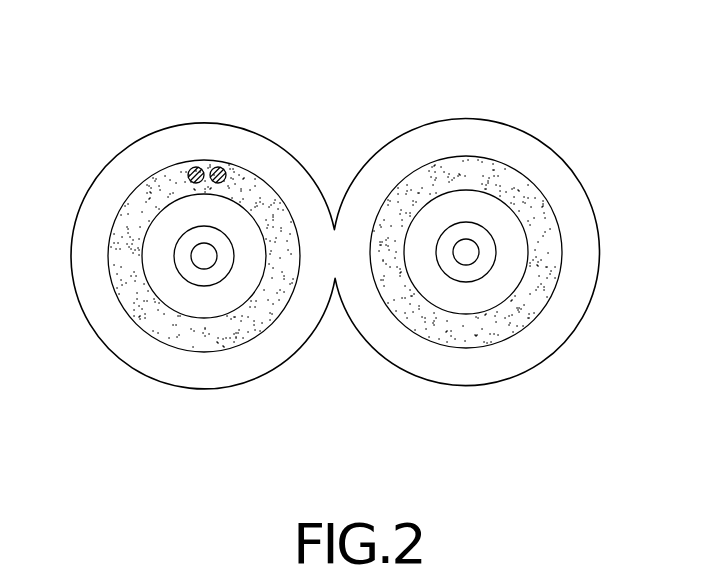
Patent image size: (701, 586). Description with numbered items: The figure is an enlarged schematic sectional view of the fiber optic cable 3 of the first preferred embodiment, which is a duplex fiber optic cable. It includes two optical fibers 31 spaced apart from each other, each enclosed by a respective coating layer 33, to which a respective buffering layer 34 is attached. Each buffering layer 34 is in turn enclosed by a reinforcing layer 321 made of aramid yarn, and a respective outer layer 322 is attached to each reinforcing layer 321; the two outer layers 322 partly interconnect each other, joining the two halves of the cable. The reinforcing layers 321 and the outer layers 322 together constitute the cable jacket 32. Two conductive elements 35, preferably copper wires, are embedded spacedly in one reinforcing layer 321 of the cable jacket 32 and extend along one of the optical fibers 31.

The fiber optic cable 3 is at (546, 99).
The optical fiber 31 is at (204, 258).
The cable jacket 32 is at (273, 63).
The reinforcing layer 321 is at (250, 187).
The outer layer 322 is at (373, 175).
The coating layer 33 is at (182, 258).
The buffering layer 34 is at (157, 232).
The conductive element 35 is at (217, 166).